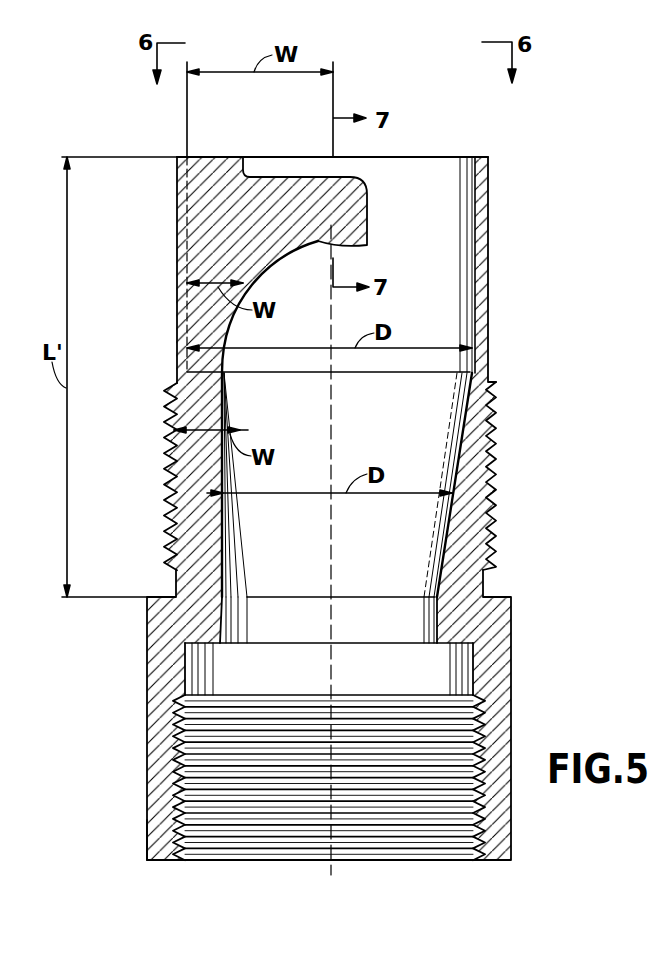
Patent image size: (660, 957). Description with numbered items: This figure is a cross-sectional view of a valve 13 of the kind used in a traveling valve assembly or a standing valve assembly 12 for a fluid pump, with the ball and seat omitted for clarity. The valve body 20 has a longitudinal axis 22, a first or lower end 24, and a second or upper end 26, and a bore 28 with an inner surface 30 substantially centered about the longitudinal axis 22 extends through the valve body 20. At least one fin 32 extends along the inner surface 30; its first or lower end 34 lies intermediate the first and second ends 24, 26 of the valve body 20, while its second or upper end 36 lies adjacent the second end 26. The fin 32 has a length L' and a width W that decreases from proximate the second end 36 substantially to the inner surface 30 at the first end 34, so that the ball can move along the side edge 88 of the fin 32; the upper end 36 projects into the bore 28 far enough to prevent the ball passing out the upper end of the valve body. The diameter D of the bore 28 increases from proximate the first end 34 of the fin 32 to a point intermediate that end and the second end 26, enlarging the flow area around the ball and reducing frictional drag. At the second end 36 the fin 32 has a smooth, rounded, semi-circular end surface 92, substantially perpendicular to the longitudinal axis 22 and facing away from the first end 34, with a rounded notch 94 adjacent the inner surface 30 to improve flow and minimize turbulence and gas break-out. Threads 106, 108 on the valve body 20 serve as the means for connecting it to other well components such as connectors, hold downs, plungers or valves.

The standing valve assembly 12 is at (512, 338).
The valve 13 is at (495, 188).
The valve body 20 is at (503, 613).
The longitudinal axis 22 is at (331, 812).
The first end 24 is at (160, 862).
The second end 26 is at (179, 156).
The bore 28 is at (283, 822).
The inner surface 30 is at (200, 450).
The fin 32 is at (208, 247).
The first end 34 is at (208, 595).
The second end 36 is at (223, 150).
The side edge 88 is at (226, 396).
The end surface 92 is at (288, 177).
The rounded notch 94 is at (243, 156).
The threads 106 is at (463, 818).
The threads 108 is at (500, 452).